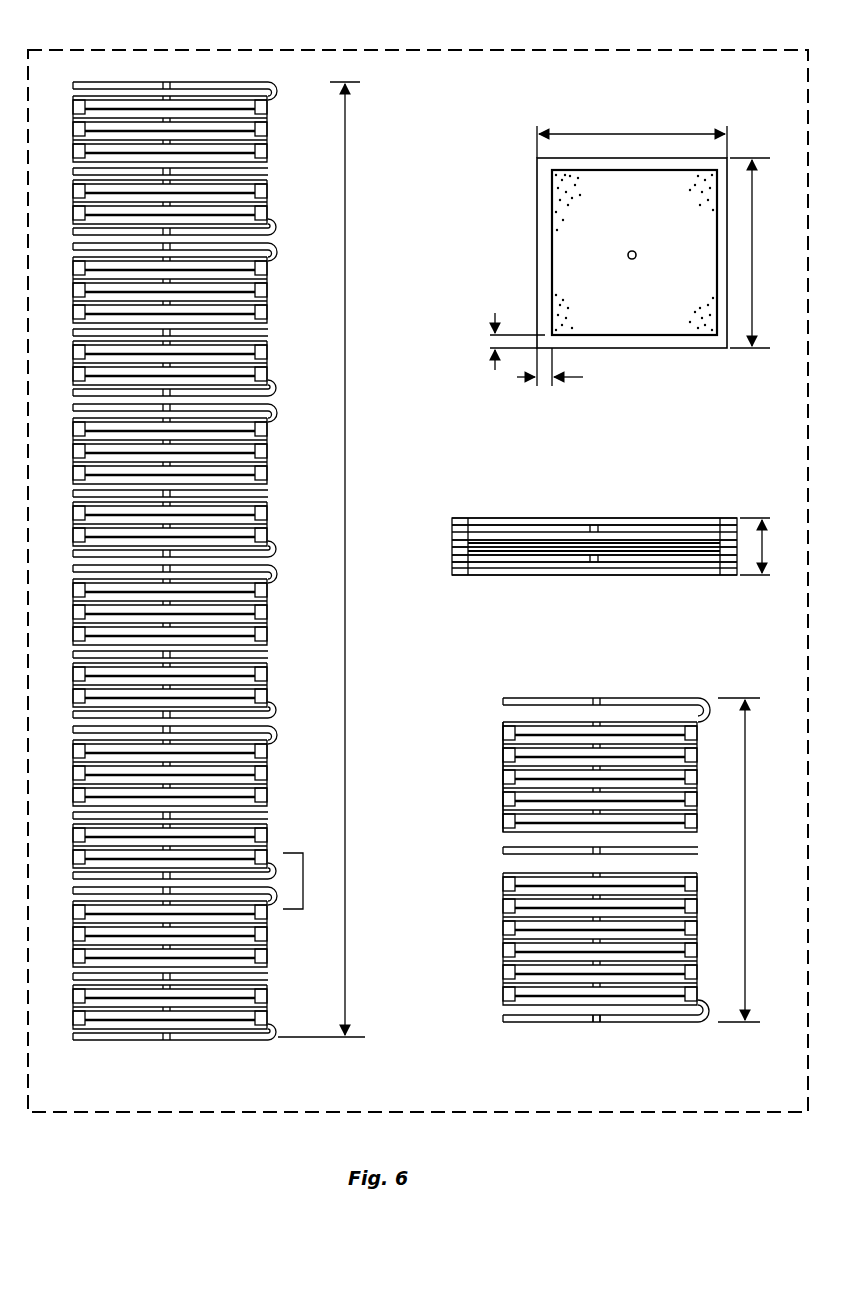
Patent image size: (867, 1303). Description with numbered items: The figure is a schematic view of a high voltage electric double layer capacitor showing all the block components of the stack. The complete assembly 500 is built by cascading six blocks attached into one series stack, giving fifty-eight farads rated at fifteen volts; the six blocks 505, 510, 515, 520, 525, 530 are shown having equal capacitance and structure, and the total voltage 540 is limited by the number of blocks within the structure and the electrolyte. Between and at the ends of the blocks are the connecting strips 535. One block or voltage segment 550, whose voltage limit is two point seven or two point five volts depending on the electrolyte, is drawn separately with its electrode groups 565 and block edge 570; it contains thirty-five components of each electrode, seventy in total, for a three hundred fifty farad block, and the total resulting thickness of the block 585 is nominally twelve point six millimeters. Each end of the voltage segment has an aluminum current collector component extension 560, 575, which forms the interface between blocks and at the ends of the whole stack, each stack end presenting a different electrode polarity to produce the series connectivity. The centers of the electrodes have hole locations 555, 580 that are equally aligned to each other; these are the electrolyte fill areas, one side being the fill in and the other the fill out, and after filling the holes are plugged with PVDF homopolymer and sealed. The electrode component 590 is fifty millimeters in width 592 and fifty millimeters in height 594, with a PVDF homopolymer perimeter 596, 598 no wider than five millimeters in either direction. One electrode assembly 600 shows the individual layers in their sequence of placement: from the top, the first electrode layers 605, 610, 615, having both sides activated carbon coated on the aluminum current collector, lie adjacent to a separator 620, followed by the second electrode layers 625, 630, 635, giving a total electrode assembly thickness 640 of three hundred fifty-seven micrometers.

The complete assembly 500 is at (386, 117).
The first block 505 is at (58, 212).
The second block 510 is at (58, 373).
The third block 515 is at (58, 534).
The fourth block 520 is at (58, 695).
The fifth block 525 is at (58, 856).
The sixth block 530 is at (58, 1017).
The intermediate connecting strip 535 is at (269, 171).
The total voltage 540 is at (351, 548).
The block or voltage segment 550 is at (737, 667).
The electrode hole location 555 is at (599, 1006).
The aluminum current collector component extension 560 is at (505, 1018).
The cell block 565 is at (490, 786).
The block side edge 570 is at (503, 760).
The aluminum current collector component extension 575 is at (505, 702).
The electrode hole location 580 is at (606, 720).
The block thickness 585 is at (748, 845).
The electrode component 590 is at (546, 114).
The electrode width 592 is at (634, 134).
The electrode height 594 is at (755, 252).
The PVDF homopolymer perimeter 596 is at (485, 343).
The PVDF homopolymer perimeter 598 is at (551, 386).
The electrode assembly 600 is at (691, 484).
The first electrode layer 605 is at (465, 521).
The first electrode layer 610 is at (455, 527).
The first electrode layer 615 is at (455, 540).
The separator 620 is at (490, 545).
The second electrode layer 625 is at (455, 555).
The second electrode layer 630 is at (462, 562).
The second electrode layer 635 is at (485, 575).
The total electrode assembly thickness 640 is at (768, 545).